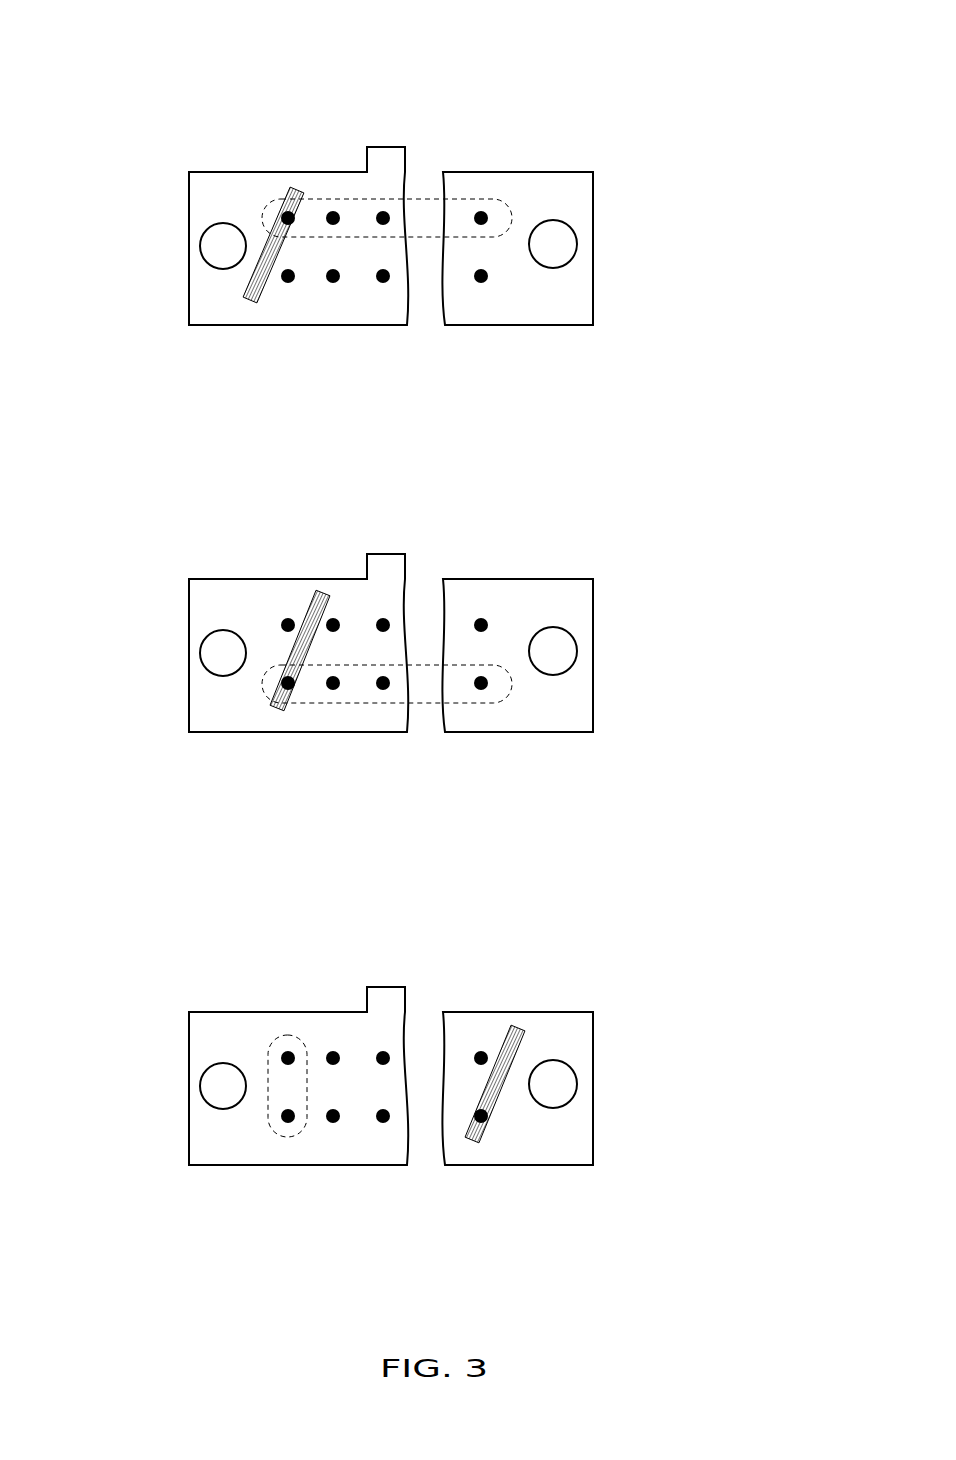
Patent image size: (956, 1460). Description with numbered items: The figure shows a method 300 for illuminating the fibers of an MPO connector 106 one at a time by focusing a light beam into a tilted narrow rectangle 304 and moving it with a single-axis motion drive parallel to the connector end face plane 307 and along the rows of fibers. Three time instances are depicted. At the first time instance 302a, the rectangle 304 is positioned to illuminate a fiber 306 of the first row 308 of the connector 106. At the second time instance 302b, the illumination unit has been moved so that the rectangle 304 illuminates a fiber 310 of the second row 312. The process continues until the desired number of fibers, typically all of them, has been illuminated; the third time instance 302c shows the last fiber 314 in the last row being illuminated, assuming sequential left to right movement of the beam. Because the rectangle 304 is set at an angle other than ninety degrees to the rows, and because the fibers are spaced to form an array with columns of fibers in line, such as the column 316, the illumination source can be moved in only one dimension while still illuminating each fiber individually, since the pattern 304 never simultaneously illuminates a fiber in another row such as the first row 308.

The method for illumination of fibers 300 is at (374, 628).
The first time instance 302a is at (331, 156).
The second time instance 302b is at (335, 646).
The third time instance 302c is at (354, 1069).
The connector 106 is at (248, 170).
The tilted narrow rectangle 304 is at (252, 302).
The fiber of first row 306 is at (288, 218).
The connector end face plane 307 is at (546, 201).
The first row 308 is at (453, 198).
The fiber of second row 310 is at (288, 683).
The second row 312 is at (442, 700).
The last fiber 314 is at (481, 1116).
The column of fibers 316 is at (287, 1138).